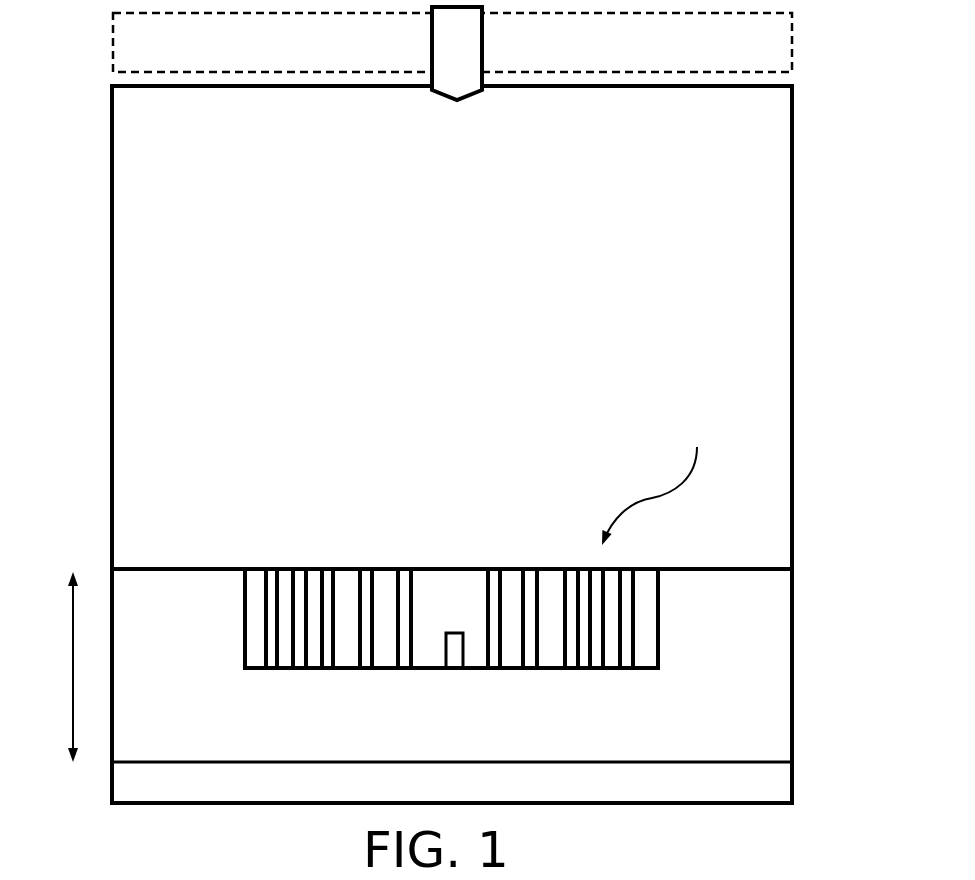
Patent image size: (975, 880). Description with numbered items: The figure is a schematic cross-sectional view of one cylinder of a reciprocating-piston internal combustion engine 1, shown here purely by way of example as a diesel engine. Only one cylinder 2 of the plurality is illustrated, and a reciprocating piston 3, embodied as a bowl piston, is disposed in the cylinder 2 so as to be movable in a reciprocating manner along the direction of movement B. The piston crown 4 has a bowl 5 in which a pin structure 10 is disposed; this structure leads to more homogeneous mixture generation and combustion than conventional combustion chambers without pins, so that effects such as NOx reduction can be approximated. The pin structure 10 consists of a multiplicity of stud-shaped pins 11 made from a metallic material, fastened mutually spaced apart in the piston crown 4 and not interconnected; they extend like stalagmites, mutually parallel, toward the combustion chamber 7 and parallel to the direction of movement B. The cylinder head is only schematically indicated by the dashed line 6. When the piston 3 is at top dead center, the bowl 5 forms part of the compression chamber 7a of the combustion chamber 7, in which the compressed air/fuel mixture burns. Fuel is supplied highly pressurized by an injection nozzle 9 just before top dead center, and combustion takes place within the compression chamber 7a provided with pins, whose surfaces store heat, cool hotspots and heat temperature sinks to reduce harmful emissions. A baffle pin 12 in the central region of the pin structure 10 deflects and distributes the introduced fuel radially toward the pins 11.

The reciprocating-piston internal combustion engine 1 is at (454, 427).
The cylinder 2 is at (112, 375).
The reciprocating piston 3 is at (747, 743).
The piston crown 4 is at (756, 670).
The bowl 5 is at (660, 595).
The dashed line 6 is at (737, 56).
The combustion chamber 7 is at (760, 303).
The compression chamber 7a is at (427, 590).
The injection nozzle 9 is at (452, 82).
The pin structure 10 is at (660, 473).
The pins 11 is at (273, 577).
The baffle pin 12 is at (453, 640).
The direction of movement B is at (70, 657).